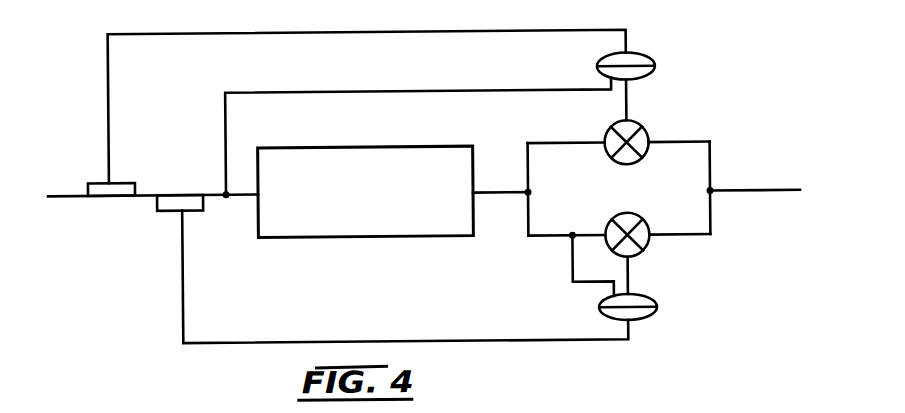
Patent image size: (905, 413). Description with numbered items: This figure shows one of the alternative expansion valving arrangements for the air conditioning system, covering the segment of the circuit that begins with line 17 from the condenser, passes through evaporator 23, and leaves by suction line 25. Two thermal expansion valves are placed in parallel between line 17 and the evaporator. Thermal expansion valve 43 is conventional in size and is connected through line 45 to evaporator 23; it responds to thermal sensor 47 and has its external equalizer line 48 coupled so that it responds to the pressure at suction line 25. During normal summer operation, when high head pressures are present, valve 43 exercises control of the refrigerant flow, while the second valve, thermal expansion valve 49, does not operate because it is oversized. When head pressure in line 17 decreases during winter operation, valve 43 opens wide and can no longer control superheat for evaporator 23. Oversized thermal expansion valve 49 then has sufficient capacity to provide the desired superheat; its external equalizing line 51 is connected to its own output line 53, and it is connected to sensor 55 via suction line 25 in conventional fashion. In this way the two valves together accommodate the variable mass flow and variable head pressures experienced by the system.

The line 17 is at (760, 193).
The evaporator 23 is at (363, 236).
The suction line 25 is at (68, 193).
The thermal expansion valve 43 is at (628, 107).
The line 45 is at (549, 143).
The thermal sensor 47 is at (120, 180).
The external equalizer line 48 is at (432, 91).
The thermal expansion valve 49 is at (632, 279).
The external equalizing line 51 is at (571, 261).
The output line 53 is at (530, 211).
The sensor 55 is at (167, 209).